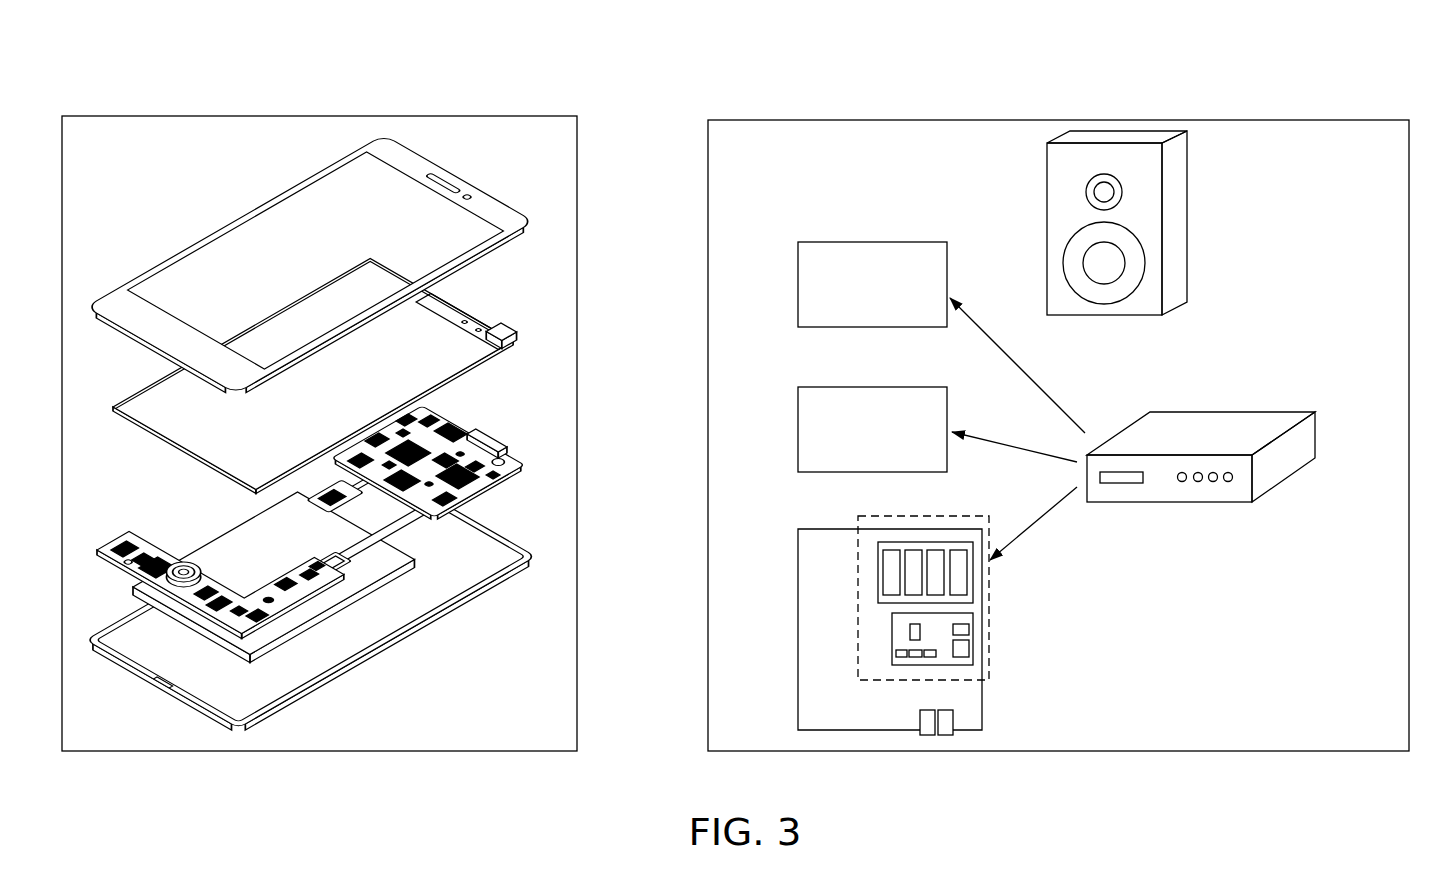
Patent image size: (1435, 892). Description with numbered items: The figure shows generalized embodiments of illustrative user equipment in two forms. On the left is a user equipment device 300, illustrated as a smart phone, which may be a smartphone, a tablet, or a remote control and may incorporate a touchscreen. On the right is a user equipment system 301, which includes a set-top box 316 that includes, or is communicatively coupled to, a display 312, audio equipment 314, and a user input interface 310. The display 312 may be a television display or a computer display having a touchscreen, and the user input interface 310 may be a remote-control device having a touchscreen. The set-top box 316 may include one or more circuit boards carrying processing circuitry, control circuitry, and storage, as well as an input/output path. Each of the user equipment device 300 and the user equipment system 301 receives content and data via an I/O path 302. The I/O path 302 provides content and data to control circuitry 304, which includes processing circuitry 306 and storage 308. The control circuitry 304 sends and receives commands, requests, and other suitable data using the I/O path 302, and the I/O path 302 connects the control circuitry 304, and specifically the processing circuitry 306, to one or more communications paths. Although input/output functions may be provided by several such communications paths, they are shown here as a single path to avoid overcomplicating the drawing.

The user equipment device 300 is at (165, 66).
The user equipment system 301 is at (1258, 78).
The I/O path 302 is at (190, 590).
The control circuitry 304 is at (858, 648).
The processing circuitry 306 is at (892, 627).
The storage 308 is at (878, 568).
The user input interface 310 is at (798, 283).
The display 312 is at (798, 395).
The audio equipment 314 is at (1047, 227).
The set-top box 316 is at (1193, 412).